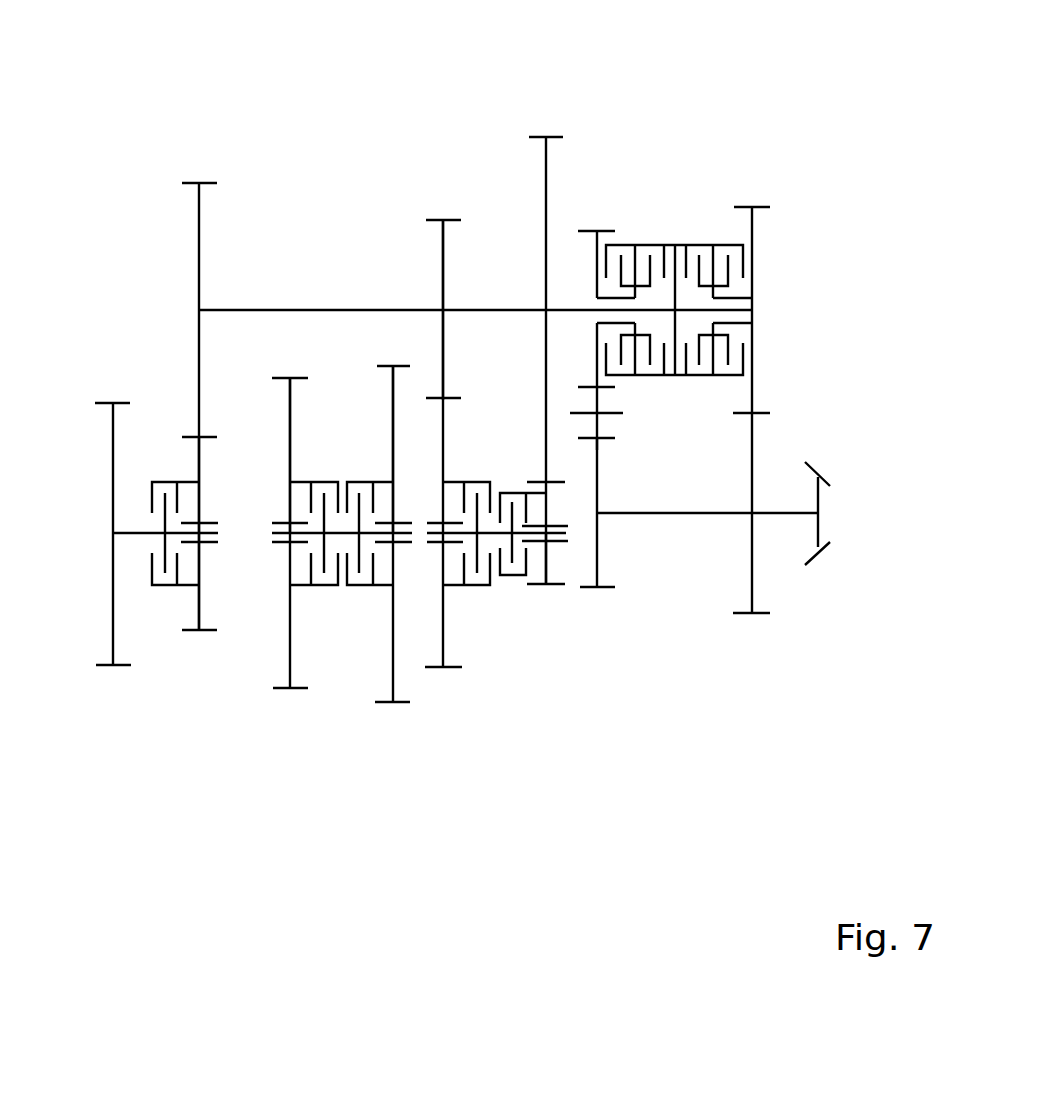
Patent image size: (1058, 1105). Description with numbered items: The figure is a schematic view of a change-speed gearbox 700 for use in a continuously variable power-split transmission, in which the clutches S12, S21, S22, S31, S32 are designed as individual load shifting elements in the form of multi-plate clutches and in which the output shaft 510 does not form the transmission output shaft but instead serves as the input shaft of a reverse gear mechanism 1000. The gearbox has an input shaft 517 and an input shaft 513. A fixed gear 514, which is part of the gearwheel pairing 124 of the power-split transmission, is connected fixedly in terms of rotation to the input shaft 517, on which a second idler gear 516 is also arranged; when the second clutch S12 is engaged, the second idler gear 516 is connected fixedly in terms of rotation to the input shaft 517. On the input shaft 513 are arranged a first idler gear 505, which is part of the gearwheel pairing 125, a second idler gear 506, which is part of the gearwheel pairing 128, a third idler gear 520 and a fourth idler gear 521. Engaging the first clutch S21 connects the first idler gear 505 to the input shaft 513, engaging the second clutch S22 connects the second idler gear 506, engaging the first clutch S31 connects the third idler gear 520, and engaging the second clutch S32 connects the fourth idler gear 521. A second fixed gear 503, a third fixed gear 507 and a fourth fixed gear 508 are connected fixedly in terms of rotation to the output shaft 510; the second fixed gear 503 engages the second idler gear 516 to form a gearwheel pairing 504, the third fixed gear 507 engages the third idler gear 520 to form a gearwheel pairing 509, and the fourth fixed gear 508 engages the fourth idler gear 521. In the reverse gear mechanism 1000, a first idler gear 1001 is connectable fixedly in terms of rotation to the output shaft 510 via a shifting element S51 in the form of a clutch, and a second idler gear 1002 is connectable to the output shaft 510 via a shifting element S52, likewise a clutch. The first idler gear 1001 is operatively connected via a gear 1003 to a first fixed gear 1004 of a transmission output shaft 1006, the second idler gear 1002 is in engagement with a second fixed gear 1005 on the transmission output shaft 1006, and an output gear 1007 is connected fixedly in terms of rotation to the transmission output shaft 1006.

The change-speed gearbox 700 is at (158, 128).
The second fixed gear 503 is at (199, 247).
The output shaft 510 is at (266, 309).
The second idler gear 506 is at (393, 437).
The third fixed gear 507 is at (443, 280).
The gearwheel pairing 509 is at (450, 388).
The fourth fixed gear 508 is at (546, 267).
The first idler gear 1001 is at (597, 277).
The shifting element S51 is at (636, 238).
The shifting element S52 is at (713, 238).
The second idler gear 1002 is at (752, 243).
The reverse gear mechanism 1000 is at (763, 308).
The gear 1003 is at (597, 402).
The input shaft 513 is at (567, 529).
The output gear 1007 is at (818, 505).
The transmission output shaft 1006 is at (758, 515).
The second fixed gear 1005 is at (758, 583).
The first fixed gear 1004 is at (597, 550).
The first idler gear 505 is at (290, 425).
The gearwheel pairing 504 is at (194, 432).
The input shaft 517 is at (137, 532).
The fixed gear 514 is at (113, 607).
The gearwheel pairing 124 is at (112, 675).
The second clutch S12 is at (167, 598).
The second idler gear 516 is at (199, 603).
The gearwheel pairing 125 is at (290, 697).
The first clutch S21 is at (321, 597).
The second clutch S22 is at (372, 597).
The gearwheel pairing 128 is at (393, 712).
The third idler gear 520 is at (443, 620).
The first clutch S31 is at (478, 595).
The second clutch S32 is at (522, 590).
The fourth idler gear 521 is at (546, 558).